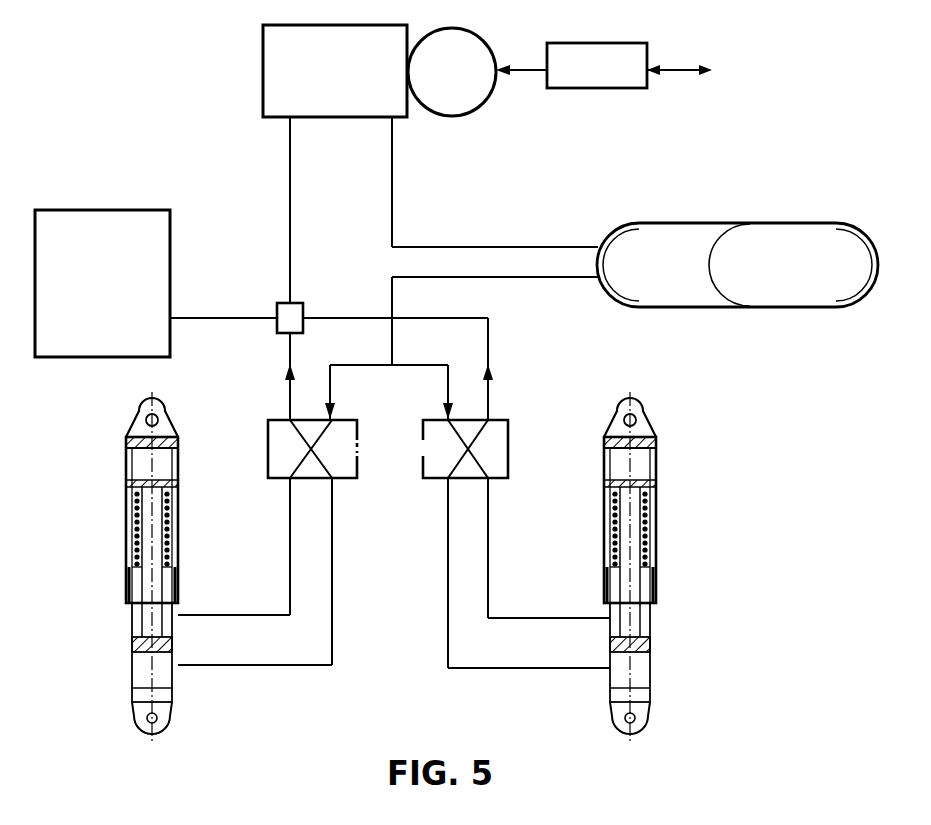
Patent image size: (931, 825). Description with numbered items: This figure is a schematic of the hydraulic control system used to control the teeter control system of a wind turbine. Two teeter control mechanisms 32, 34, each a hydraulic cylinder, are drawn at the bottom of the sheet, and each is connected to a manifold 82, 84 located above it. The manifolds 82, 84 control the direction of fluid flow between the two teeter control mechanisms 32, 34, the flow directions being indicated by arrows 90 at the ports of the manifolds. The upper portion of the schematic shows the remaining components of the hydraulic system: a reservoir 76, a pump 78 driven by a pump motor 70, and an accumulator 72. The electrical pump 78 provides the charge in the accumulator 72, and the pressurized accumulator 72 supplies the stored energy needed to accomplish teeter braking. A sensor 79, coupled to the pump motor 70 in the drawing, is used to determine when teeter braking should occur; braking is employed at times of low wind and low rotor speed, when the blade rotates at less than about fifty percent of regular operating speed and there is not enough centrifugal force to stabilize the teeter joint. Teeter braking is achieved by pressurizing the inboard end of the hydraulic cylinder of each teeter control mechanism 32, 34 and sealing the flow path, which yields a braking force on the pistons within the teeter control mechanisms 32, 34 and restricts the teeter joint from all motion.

The pump 78 is at (322, 83).
The pump motor 70 is at (439, 84).
The sensor 79 is at (590, 43).
The reservoir 76 is at (89, 275).
The accumulator 72 is at (779, 278).
The arrows 90 is at (290, 396).
The manifold 84 is at (268, 452).
The manifold 82 is at (508, 441).
The teeter control mechanism 34 is at (148, 590).
The teeter control mechanism 32 is at (634, 583).